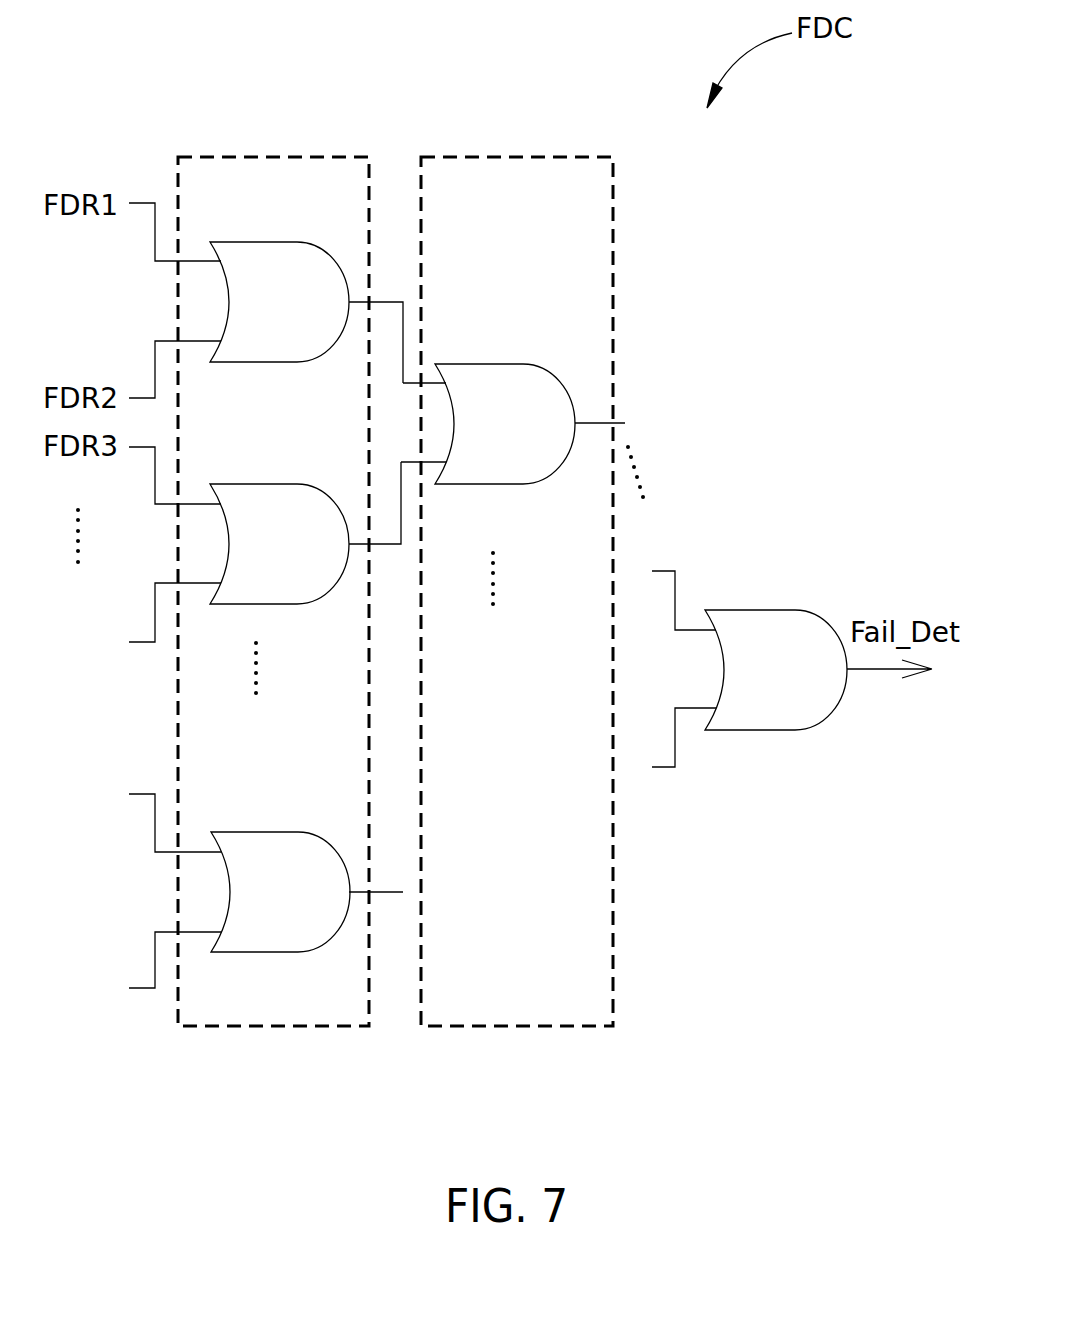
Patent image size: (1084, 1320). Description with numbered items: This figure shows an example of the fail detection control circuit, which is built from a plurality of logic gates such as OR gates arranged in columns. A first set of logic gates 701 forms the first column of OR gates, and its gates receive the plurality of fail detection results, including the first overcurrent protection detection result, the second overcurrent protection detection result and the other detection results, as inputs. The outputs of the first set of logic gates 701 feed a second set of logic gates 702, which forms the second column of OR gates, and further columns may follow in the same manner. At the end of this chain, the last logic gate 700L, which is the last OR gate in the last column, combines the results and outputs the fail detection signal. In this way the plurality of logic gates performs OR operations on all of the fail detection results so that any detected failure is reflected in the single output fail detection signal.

The first set of logic gates 701 is at (265, 157).
The second set of logic gates 702 is at (527, 157).
The last logic gate 700L is at (820, 687).